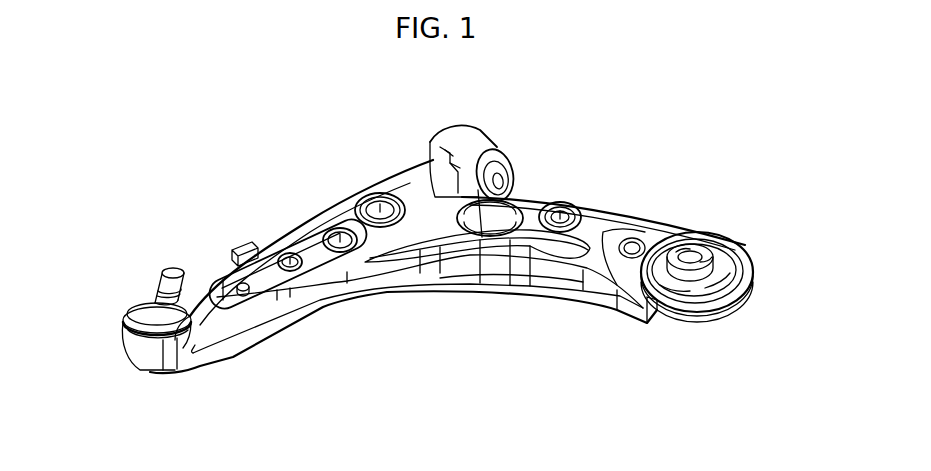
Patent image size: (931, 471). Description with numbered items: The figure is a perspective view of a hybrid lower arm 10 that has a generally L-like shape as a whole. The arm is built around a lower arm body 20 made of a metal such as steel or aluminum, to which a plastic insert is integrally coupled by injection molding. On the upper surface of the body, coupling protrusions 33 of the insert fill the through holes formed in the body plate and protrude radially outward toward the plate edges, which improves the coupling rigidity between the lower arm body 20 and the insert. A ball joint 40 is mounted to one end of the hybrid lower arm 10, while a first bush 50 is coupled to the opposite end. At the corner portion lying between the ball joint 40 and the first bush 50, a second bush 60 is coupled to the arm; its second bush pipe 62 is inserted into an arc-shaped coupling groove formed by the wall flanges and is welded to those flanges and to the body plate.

The hybrid lower arm 10 is at (628, 178).
The lower arm body 20 is at (403, 185).
The coupling protrusions 33 is at (378, 200).
The ball joint 40 is at (154, 256).
The first bush 50 is at (698, 250).
The second bush 60 is at (508, 177).
The second bush pipe 62 is at (470, 130).